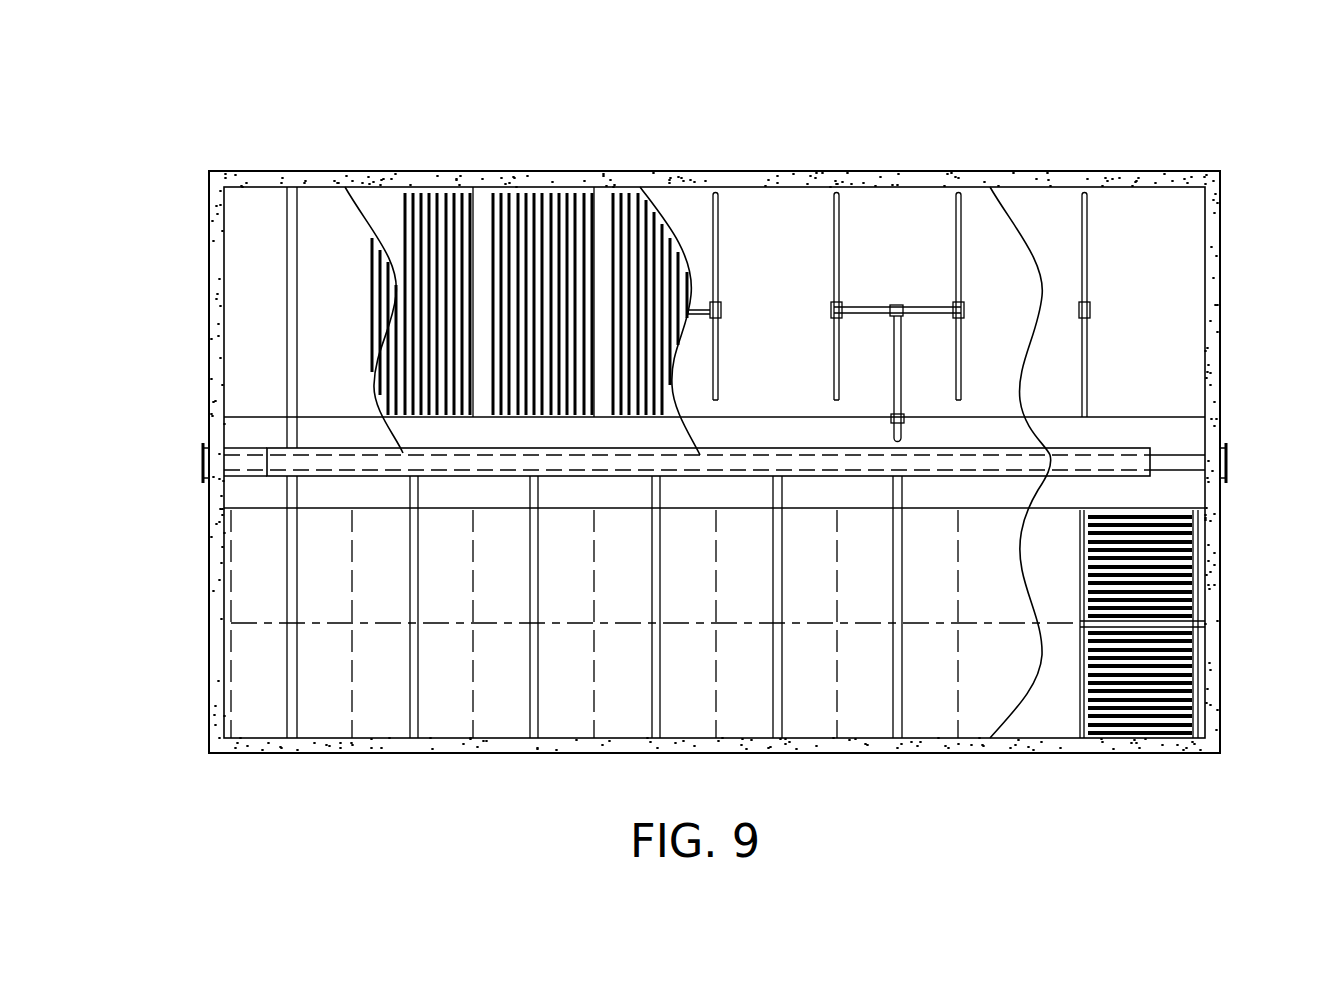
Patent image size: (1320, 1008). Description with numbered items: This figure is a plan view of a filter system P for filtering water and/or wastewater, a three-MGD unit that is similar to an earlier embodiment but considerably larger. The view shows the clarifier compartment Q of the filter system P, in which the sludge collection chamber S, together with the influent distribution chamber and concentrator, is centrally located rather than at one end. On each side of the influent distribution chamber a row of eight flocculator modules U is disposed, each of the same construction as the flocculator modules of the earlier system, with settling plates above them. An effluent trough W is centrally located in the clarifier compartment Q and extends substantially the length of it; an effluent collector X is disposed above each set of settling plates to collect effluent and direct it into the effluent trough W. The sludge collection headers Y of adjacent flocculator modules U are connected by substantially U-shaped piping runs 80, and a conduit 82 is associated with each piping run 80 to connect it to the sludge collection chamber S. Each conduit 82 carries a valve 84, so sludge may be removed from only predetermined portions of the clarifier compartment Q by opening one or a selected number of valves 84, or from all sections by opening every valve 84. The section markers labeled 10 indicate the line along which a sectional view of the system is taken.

The filter system P is at (711, 391).
The clarifier compartment Q is at (215, 310).
The sludge collection chamber S is at (1005, 425).
The effluent trough W is at (1105, 448).
The flocculator module U is at (1068, 576).
The effluent collector X is at (538, 578).
The sludge collection header Y is at (834, 266).
The piping run 80 is at (865, 306).
The conduit 82 is at (900, 357).
The valve 84 is at (891, 426).
The section line 10- 10 is at (170, 633).